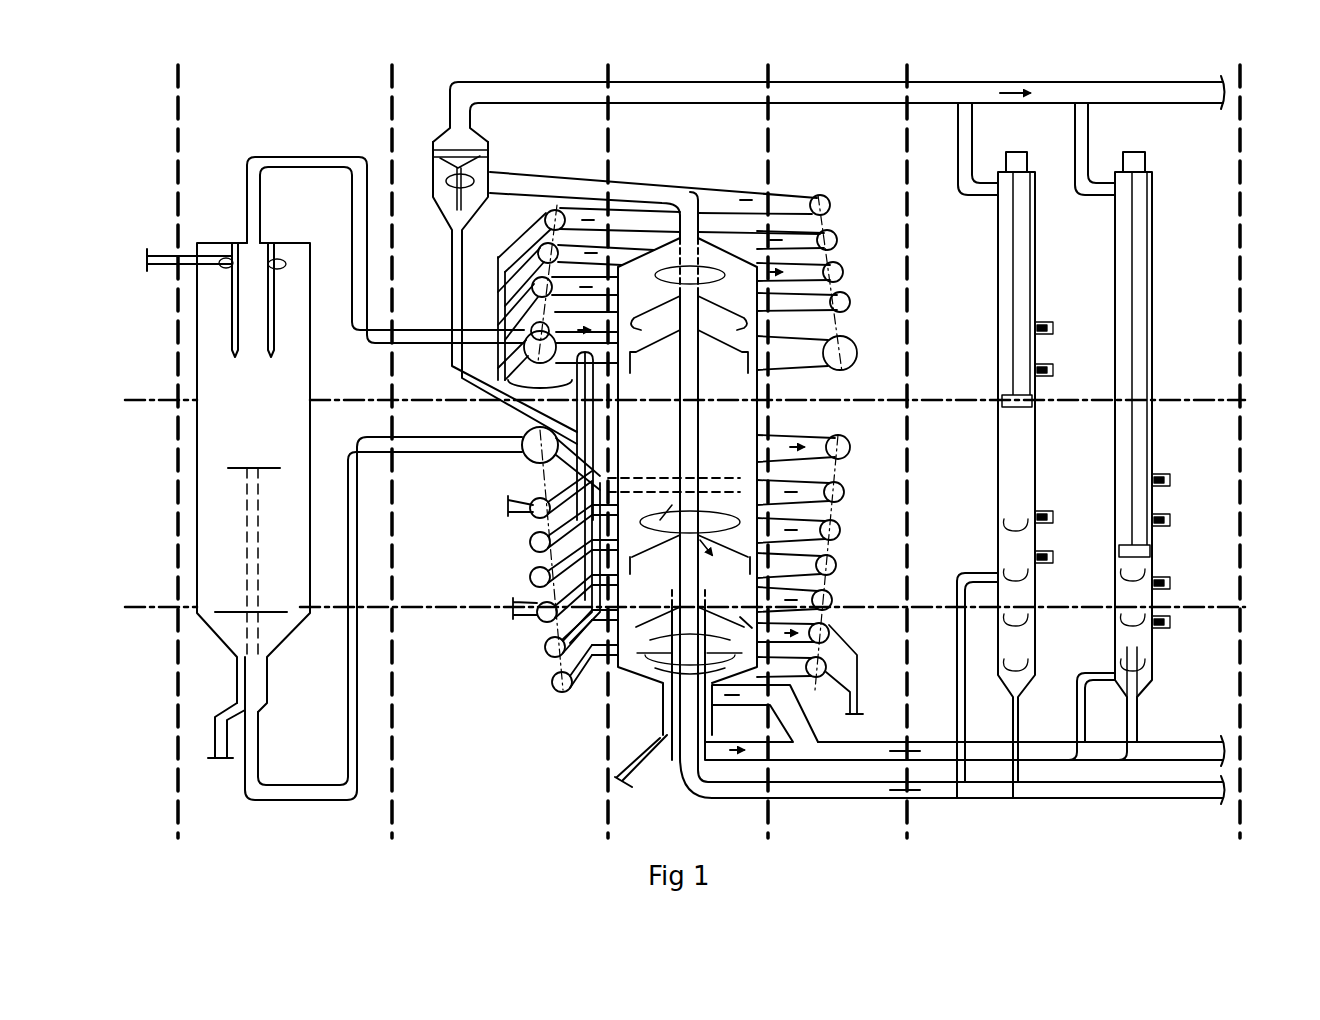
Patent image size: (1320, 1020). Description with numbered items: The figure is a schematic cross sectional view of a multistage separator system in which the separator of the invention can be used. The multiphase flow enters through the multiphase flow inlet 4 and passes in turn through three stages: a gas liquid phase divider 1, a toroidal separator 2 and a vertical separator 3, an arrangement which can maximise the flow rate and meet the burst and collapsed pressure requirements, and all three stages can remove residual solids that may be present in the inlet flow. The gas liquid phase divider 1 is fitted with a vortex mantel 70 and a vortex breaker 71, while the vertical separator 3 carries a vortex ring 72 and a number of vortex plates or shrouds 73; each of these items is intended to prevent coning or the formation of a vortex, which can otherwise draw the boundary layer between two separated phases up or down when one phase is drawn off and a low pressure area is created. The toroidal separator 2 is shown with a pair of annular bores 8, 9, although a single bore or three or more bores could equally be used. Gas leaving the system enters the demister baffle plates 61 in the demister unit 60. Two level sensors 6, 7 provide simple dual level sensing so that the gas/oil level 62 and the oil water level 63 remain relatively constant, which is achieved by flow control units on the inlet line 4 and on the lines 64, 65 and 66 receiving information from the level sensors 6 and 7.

The gas liquid phase divider 1 is at (207, 243).
The toroidal separator 2 is at (523, 457).
The vertical separator 3 is at (620, 673).
The multiphase flow inlet 4 is at (145, 262).
The level sensor 6 is at (1037, 257).
The level sensor 7 is at (1155, 257).
The annular bore 8 is at (858, 349).
The annular bore 9 is at (857, 438).
The demister unit 60 is at (440, 135).
The demister baffle plates 61 is at (467, 162).
The gas/oil level 62 is at (715, 404).
The oil water level 63 is at (715, 609).
The line 64 is at (1236, 95).
The line 65 is at (1236, 754).
The line 66 is at (1236, 804).
The vortex mantel 70 is at (230, 298).
The vortex breaker 71 is at (233, 612).
The vortex ring 72 is at (662, 658).
The vortex plates or shrouds 73 is at (733, 623).